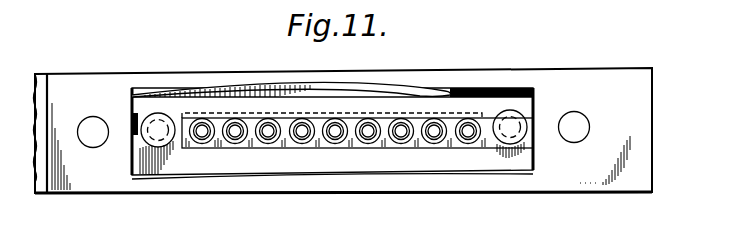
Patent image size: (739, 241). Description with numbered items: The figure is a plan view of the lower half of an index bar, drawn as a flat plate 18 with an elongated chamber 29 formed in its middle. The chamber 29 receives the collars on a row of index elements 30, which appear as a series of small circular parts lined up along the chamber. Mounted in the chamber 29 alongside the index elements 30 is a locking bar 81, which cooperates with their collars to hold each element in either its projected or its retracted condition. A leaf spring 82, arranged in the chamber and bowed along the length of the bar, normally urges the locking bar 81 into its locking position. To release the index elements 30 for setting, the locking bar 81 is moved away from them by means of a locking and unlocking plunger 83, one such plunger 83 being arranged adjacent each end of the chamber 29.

The guide plate 18 is at (652, 131).
The chamber 29 is at (453, 142).
The index elements 30 is at (365, 137).
The locking bar 81 is at (486, 100).
The leaf spring 82 is at (400, 88).
The locking and unlocking plunger 83 is at (157, 145).